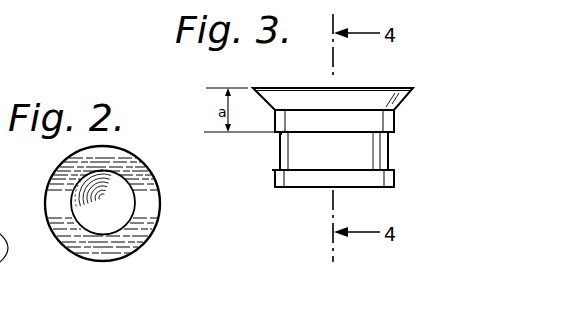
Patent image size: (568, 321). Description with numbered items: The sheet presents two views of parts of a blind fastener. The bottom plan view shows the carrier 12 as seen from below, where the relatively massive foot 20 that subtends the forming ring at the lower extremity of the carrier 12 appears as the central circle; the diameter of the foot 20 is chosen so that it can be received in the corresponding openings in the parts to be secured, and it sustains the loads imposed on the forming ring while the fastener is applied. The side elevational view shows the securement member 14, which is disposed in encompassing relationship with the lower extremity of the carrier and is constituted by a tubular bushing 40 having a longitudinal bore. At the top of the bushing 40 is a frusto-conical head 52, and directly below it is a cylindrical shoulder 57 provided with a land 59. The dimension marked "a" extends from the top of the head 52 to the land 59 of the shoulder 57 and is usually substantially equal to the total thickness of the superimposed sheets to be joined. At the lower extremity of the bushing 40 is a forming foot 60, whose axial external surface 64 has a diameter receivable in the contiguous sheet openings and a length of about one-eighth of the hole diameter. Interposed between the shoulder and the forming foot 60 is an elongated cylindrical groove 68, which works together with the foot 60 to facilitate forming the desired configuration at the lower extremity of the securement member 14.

In FIG. 2, the carrier 12 is at (166, 217).
In FIG. 2, the foot 20 is at (90, 255).
In FIG. 3, the securement member 14 is at (346, 165).
In FIG. 3, the frusto-conical head 52 is at (403, 101).
In FIG. 3, the cylindrical shoulder 57 is at (396, 121).
In FIG. 3, the land 59 is at (276, 134).
In FIG. 3, the elongated cylindrical groove 68 is at (280, 152).
In FIG. 3, the forming foot 60 is at (275, 176).
In FIG. 3, the axial external surface 64 is at (396, 178).
In FIG. 3, the tubular bushing 40 is at (303, 196).